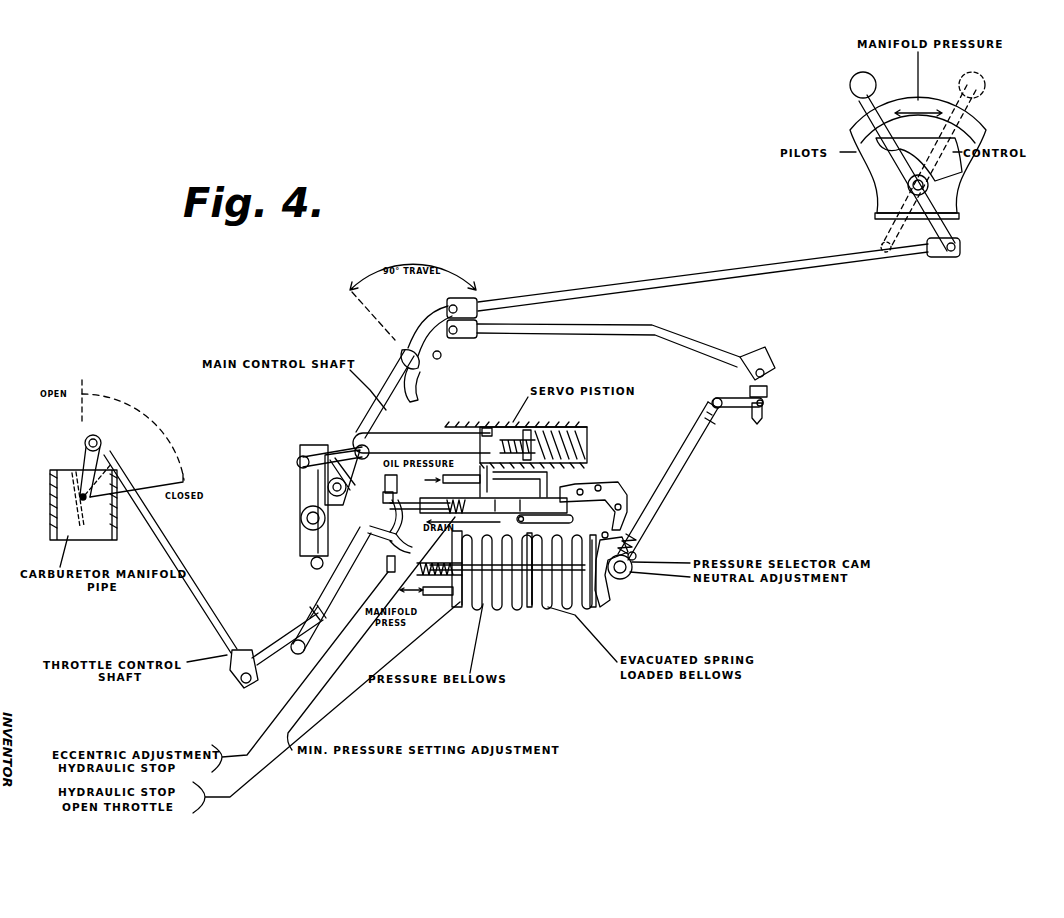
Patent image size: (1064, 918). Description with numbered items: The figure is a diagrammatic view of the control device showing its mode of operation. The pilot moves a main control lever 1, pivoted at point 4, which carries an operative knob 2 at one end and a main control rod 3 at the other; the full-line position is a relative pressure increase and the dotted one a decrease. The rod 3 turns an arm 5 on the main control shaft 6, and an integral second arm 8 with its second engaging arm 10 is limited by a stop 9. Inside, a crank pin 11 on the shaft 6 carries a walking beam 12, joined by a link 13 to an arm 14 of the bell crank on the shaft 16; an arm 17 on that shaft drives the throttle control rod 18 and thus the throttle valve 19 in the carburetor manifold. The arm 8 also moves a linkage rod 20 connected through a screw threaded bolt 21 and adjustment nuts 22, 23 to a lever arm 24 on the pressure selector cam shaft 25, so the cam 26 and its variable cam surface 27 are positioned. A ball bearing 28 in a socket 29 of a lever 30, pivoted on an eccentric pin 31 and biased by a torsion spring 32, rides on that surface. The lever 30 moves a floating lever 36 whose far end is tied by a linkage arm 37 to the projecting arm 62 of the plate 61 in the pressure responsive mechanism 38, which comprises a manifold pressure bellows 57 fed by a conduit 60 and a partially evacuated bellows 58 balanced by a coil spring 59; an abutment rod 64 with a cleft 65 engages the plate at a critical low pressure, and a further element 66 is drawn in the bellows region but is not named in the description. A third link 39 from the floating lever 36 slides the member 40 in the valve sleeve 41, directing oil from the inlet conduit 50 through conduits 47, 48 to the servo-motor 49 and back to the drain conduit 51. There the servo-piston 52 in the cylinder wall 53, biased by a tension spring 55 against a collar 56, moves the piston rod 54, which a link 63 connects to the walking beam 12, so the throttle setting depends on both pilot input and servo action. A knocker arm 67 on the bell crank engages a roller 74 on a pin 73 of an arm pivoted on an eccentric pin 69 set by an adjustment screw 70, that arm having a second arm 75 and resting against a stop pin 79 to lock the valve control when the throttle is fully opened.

The main control lever 1 is at (898, 158).
The operative knob 2 is at (850, 86).
The main control rod 3 is at (855, 262).
The pivot point 4 is at (935, 187).
The arm 5 is at (429, 322).
The main control shaft 6 is at (385, 416).
The second arm 8 is at (402, 352).
The stop 9 is at (441, 355).
The second engaging arm 10 is at (420, 383).
The crank pin 11 is at (300, 514).
The walking beam 12 is at (300, 490).
The link 13 is at (308, 566).
The arm of bell crank lever 14 is at (331, 590).
The shaft 16 is at (312, 608).
The arm 17 is at (268, 670).
The throttle control rod 18 is at (200, 601).
The throttle valve 19 is at (77, 520).
The linkage rod 20 is at (647, 326).
The screw threaded bolt 21 is at (768, 374).
The adjustment nut 22 is at (768, 393).
The adjustment nut 23 is at (764, 413).
The lever arm 24 is at (740, 408).
The pressure selector cam shaft 25 is at (668, 496).
The cam 26 is at (640, 554).
The variable cam surface 27 is at (629, 574).
The anti-frictional single ball bearing 28 is at (607, 588).
The socket 29 is at (604, 600).
The lever 30 is at (610, 491).
The eccentric pin 31 is at (597, 528).
The torsion spring 32 is at (645, 530).
The floating lever 36 is at (617, 484).
The linkage arm 37 is at (621, 507).
The pressure responsive mechanism 38 is at (497, 607).
The third link 39 is at (587, 490).
The slidably adjustable member 40 is at (545, 525).
The valve sleeve 41 is at (478, 496).
The conduit 47 is at (479, 492).
The conduit 48 is at (541, 496).
The servo-motor 49 is at (590, 426).
The conduit 50 is at (516, 445).
The drain conduit 51 is at (446, 567).
The servo-piston 52 is at (505, 430).
The cylinder wall 53 is at (590, 432).
The piston rod 54 is at (405, 441).
The tension spring 55 is at (590, 448).
The collar 56 is at (487, 428).
The bellows 57 is at (458, 605).
The bellows 58 is at (551, 607).
The coil spring 59 is at (598, 606).
The conduit 60 is at (426, 594).
The plate 61 is at (529, 608).
The projecting arm 62 is at (503, 513).
The link 63 is at (325, 452).
The abutment rod 64 is at (500, 568).
The cleft 65 is at (440, 488).
The bellows rod 66 is at (525, 566).
The knocker arm 67 is at (370, 521).
The eccentric pin 69 is at (409, 581).
The adjustment screw 70 is at (390, 572).
The pin 73 is at (396, 538).
The roller 74 is at (412, 533).
The second arm 75 is at (385, 494).
The stop pin 79 is at (390, 499).